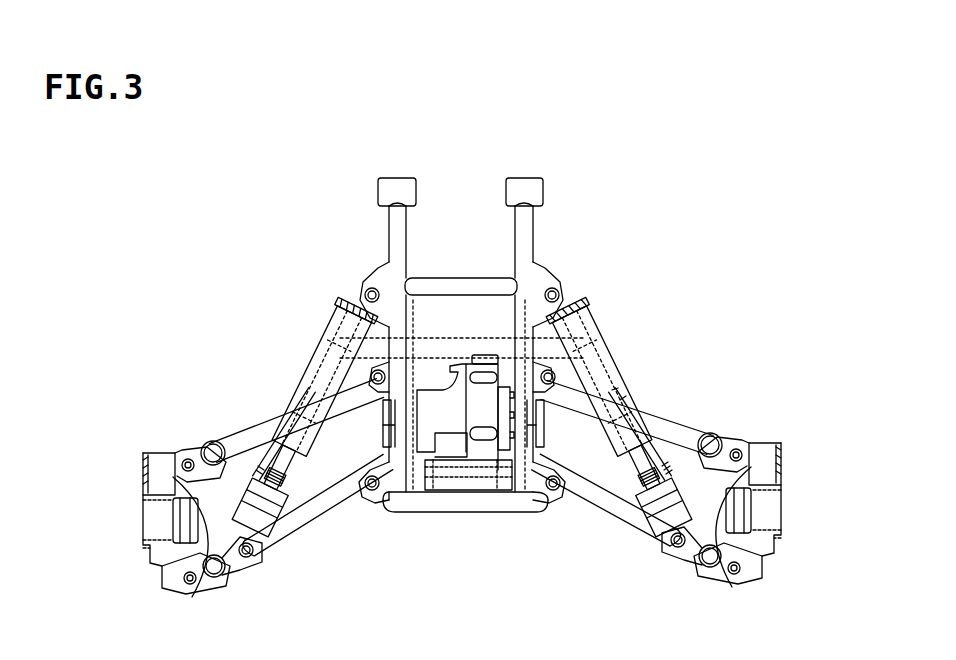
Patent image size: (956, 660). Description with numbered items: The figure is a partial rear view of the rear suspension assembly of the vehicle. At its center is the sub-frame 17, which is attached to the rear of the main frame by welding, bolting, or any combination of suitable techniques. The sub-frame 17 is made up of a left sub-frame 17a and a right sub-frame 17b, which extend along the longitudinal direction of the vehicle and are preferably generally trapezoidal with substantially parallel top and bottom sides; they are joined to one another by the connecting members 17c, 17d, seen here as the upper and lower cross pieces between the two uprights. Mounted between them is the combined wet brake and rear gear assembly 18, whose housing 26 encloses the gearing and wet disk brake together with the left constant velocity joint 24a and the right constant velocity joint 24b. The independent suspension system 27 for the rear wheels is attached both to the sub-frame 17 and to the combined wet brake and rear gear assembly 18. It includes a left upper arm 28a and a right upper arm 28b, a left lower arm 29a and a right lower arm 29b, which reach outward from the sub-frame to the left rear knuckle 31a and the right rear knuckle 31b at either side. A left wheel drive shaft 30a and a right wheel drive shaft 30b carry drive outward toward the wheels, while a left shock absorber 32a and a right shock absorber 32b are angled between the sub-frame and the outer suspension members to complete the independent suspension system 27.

The sub-frame 17 is at (435, 365).
The left sub-frame 17a is at (392, 226).
The right sub-frame 17b is at (527, 220).
The connecting member 17c is at (430, 285).
The connecting member 17d is at (420, 500).
The combined wet brake and rear gear assembly 18 is at (452, 455).
The left constant velocity joint 24a is at (413, 435).
The right constant velocity joint 24b is at (518, 435).
The housing 26 is at (470, 420).
The independent suspension system 27 is at (628, 408).
The left upper arm 28a is at (252, 436).
The right upper arm 28b is at (660, 420).
The left lower arm 29a is at (275, 535).
The right lower arm 29b is at (605, 505).
The left wheel drive shaft 30a is at (205, 510).
The right wheel drive shaft 30b is at (700, 540).
The left rear knuckle 31a is at (143, 522).
The right rear knuckle 31b is at (782, 510).
The left shock absorber 32a is at (335, 358).
The right shock absorber 32b is at (583, 330).